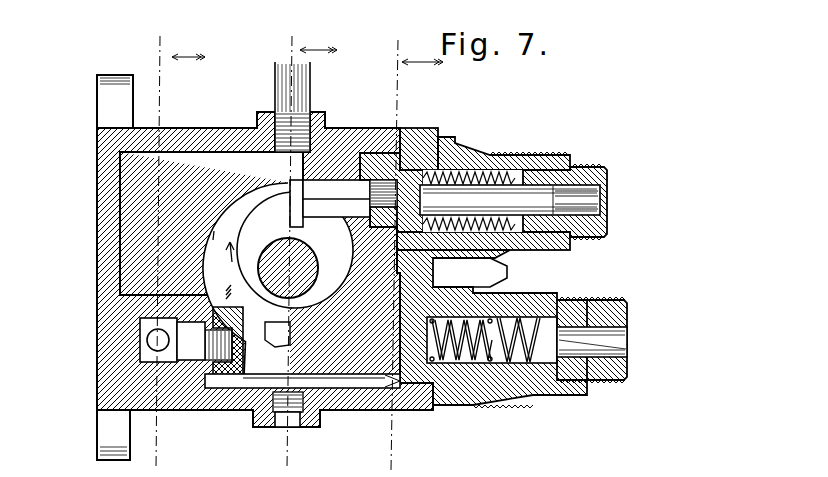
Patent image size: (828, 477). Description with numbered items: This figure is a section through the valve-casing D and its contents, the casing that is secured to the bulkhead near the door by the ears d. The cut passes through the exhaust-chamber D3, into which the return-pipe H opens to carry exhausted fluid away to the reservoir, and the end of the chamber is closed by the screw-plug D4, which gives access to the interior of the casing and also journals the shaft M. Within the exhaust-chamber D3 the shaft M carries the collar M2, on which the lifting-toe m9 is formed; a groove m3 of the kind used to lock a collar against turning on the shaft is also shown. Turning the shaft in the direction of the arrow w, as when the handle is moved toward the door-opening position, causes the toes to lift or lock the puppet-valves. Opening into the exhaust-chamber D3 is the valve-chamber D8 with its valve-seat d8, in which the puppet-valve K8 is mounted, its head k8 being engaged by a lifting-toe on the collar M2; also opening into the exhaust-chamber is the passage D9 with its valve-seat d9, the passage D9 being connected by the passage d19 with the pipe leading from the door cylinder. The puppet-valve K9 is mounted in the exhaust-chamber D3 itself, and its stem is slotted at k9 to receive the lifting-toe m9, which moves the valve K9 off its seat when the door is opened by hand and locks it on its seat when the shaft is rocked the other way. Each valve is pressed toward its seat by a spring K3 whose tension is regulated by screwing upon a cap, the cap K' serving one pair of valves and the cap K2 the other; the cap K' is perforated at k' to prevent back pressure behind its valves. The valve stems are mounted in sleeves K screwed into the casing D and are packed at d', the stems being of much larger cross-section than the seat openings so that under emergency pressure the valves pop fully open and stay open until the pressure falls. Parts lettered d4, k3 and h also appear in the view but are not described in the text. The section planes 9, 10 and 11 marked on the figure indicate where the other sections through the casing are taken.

The valve-casing D is at (200, 131).
The exhaust-chamber D3 is at (211, 264).
The collar M2 is at (257, 245).
The screw-plug D4 is at (207, 267).
The partition lip d4 is at (214, 231).
The arrow w is at (222, 270).
The shaft M is at (280, 257).
The ears d is at (92, 266).
The return-pipe H is at (283, 82).
The head k8 is at (293, 185).
The key k3 is at (322, 198).
The groove m3 is at (282, 203).
The valve-chamber D8 is at (373, 160).
The valve-seat d8 is at (365, 168).
The puppet-valve K8 is at (407, 140).
The sleeve K is at (492, 274).
The stem packing d' is at (504, 267).
The cap K2 is at (608, 193).
The spring K3 is at (505, 262).
The cap K' is at (608, 335).
The perforation k' is at (606, 346).
The passage D9 is at (147, 322).
The passage d19 is at (147, 342).
The valve-seat d9 is at (203, 365).
The slot k9 is at (244, 342).
The lifting-toe m9 is at (278, 334).
The puppet-valve K9 is at (352, 368).
The screw h is at (288, 428).
The section plane 11 is at (176, 241).
The section plane 9 is at (310, 241).
The section plane 10 is at (414, 244).